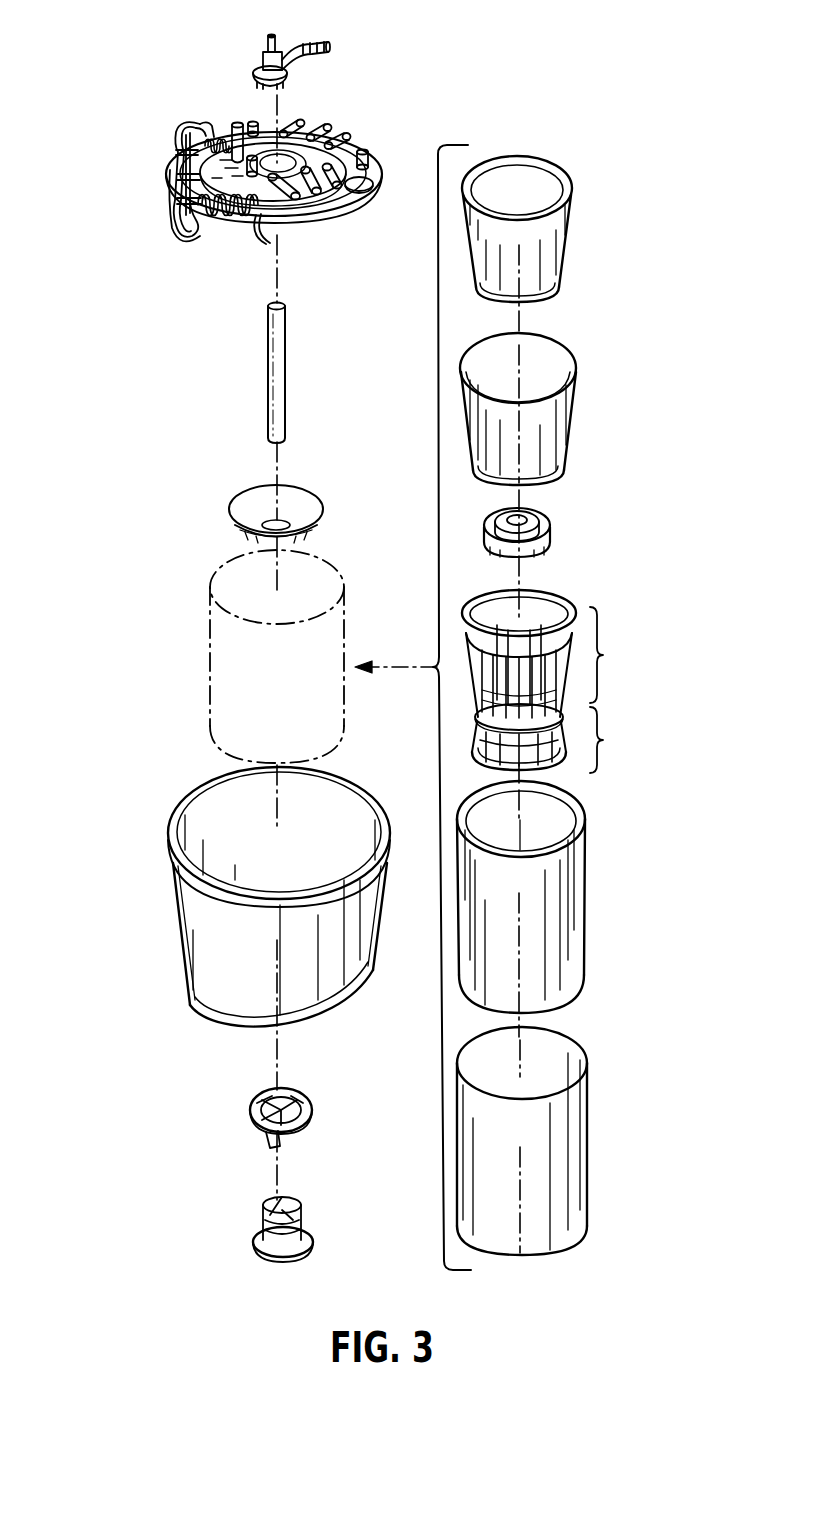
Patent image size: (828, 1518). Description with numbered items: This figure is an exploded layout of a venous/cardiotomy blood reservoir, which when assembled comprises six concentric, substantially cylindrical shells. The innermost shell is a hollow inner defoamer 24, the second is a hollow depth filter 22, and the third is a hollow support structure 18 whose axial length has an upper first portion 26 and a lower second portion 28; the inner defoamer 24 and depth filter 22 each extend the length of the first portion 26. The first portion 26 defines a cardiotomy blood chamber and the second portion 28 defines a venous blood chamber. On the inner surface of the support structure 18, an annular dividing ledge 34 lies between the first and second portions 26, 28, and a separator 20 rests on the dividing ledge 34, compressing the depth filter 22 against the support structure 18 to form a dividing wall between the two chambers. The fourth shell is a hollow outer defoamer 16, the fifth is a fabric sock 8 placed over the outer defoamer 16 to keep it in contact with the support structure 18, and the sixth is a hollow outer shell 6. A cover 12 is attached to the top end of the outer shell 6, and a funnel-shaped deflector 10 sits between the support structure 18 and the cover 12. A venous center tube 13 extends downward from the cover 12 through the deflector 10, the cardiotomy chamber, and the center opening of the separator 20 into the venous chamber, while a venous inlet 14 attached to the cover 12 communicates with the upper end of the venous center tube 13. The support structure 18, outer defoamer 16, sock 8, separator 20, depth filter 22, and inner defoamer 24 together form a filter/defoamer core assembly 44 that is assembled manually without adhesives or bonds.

The outer shell 6 is at (172, 907).
The fabric sock 8 is at (587, 1148).
The deflector 10 is at (323, 498).
The cover 12 is at (363, 143).
The venous center tube 13 is at (285, 368).
The venous inlet 14 is at (327, 42).
The outer defoamer 16 is at (585, 878).
The support structure 18 is at (547, 590).
The separator 20 is at (550, 533).
The depth filter 22 is at (577, 403).
The inner defoamer 24 is at (572, 227).
The first portion 26 is at (616, 655).
The second portion 28 is at (616, 740).
The dividing ledge 34 is at (480, 762).
The filter/defoamer core assembly 44 is at (343, 637).